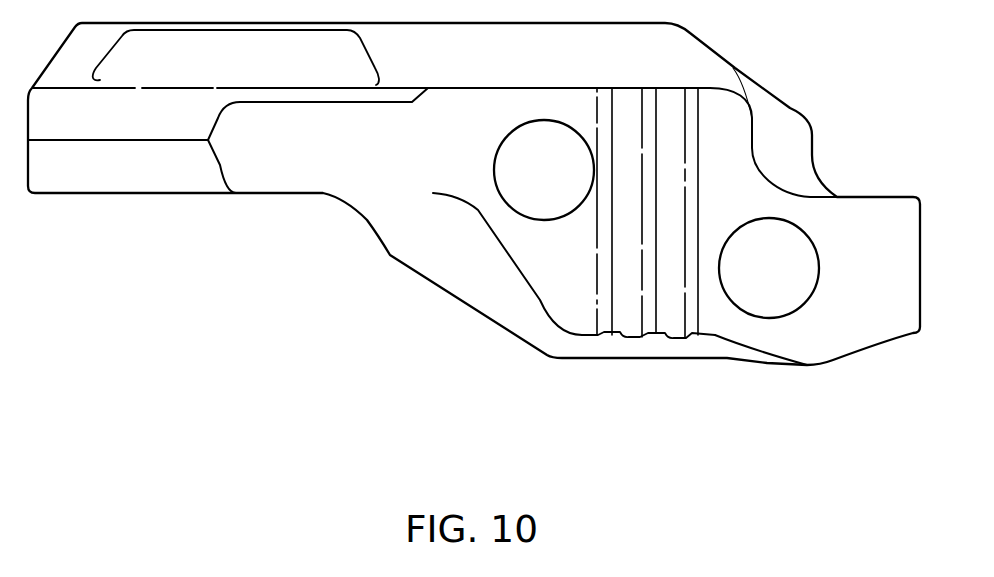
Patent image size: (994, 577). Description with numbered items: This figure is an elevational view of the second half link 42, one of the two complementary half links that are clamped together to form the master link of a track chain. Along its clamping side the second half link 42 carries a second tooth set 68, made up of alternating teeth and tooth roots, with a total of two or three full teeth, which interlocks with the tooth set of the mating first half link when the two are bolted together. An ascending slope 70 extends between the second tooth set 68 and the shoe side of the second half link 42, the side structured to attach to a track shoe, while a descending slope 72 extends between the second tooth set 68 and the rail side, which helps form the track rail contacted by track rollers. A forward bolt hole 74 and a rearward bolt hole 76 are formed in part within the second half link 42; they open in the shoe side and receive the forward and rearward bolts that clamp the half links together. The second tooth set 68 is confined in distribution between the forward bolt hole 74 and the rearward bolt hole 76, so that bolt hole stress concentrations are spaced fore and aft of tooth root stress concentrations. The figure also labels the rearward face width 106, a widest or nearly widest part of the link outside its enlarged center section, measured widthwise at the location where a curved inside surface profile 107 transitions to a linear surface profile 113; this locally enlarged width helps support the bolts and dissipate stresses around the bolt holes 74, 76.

The second half link 42 is at (46, 170).
The second tooth set 68 is at (633, 84).
The ascending slope 70 is at (857, 207).
The descending slope 72 is at (554, 297).
The forward bolt hole 74 is at (730, 298).
The rearward bolt hole 76 is at (497, 188).
The rearward face width 106 is at (458, 88).
The curved inside surface profile 107 is at (475, 213).
The linear surface profile 113 is at (213, 194).